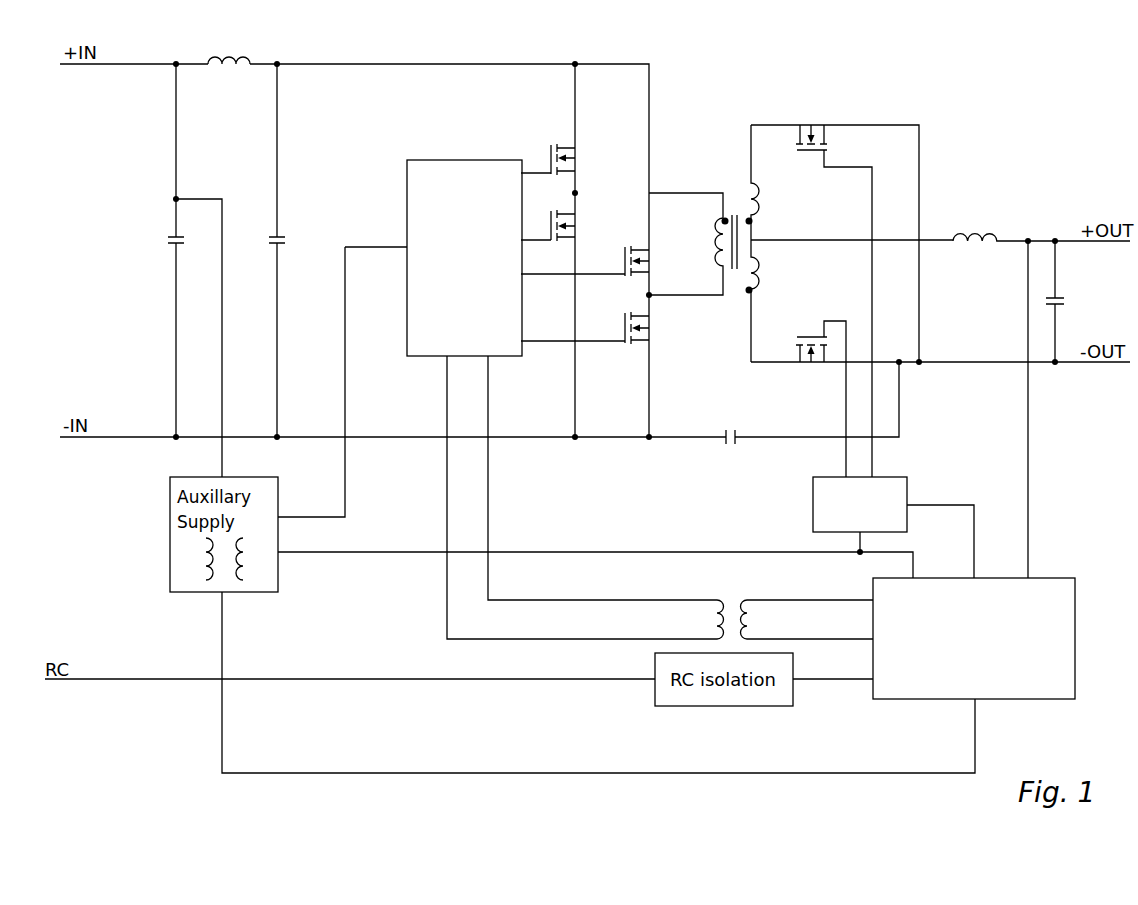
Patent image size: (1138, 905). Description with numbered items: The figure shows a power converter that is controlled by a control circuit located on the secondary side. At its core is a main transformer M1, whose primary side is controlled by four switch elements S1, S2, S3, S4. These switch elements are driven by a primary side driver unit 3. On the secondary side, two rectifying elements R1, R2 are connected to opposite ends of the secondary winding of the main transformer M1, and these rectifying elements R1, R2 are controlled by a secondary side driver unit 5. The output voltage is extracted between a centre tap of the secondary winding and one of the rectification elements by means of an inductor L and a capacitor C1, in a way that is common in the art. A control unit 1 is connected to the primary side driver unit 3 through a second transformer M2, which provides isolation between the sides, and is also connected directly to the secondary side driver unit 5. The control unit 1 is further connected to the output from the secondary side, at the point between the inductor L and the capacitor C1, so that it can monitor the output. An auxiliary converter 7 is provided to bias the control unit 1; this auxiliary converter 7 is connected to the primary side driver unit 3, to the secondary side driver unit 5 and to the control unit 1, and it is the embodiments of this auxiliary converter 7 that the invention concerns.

The control unit 1 is at (1050, 618).
The primary side driver unit 3 is at (508, 333).
The secondary side driver unit 5 is at (831, 509).
The auxiliary converter 7 is at (270, 578).
The switch element S1 is at (557, 144).
The switch element S2 is at (557, 242).
The switch element S3 is at (653, 250).
The switch element S4 is at (652, 352).
The rectifying element R1 is at (832, 125).
The rectifying element R2 is at (832, 364).
The main transformer M1 is at (733, 199).
The second transformer M2 is at (748, 599).
The inductor L is at (971, 235).
The capacitor C1 is at (1061, 306).